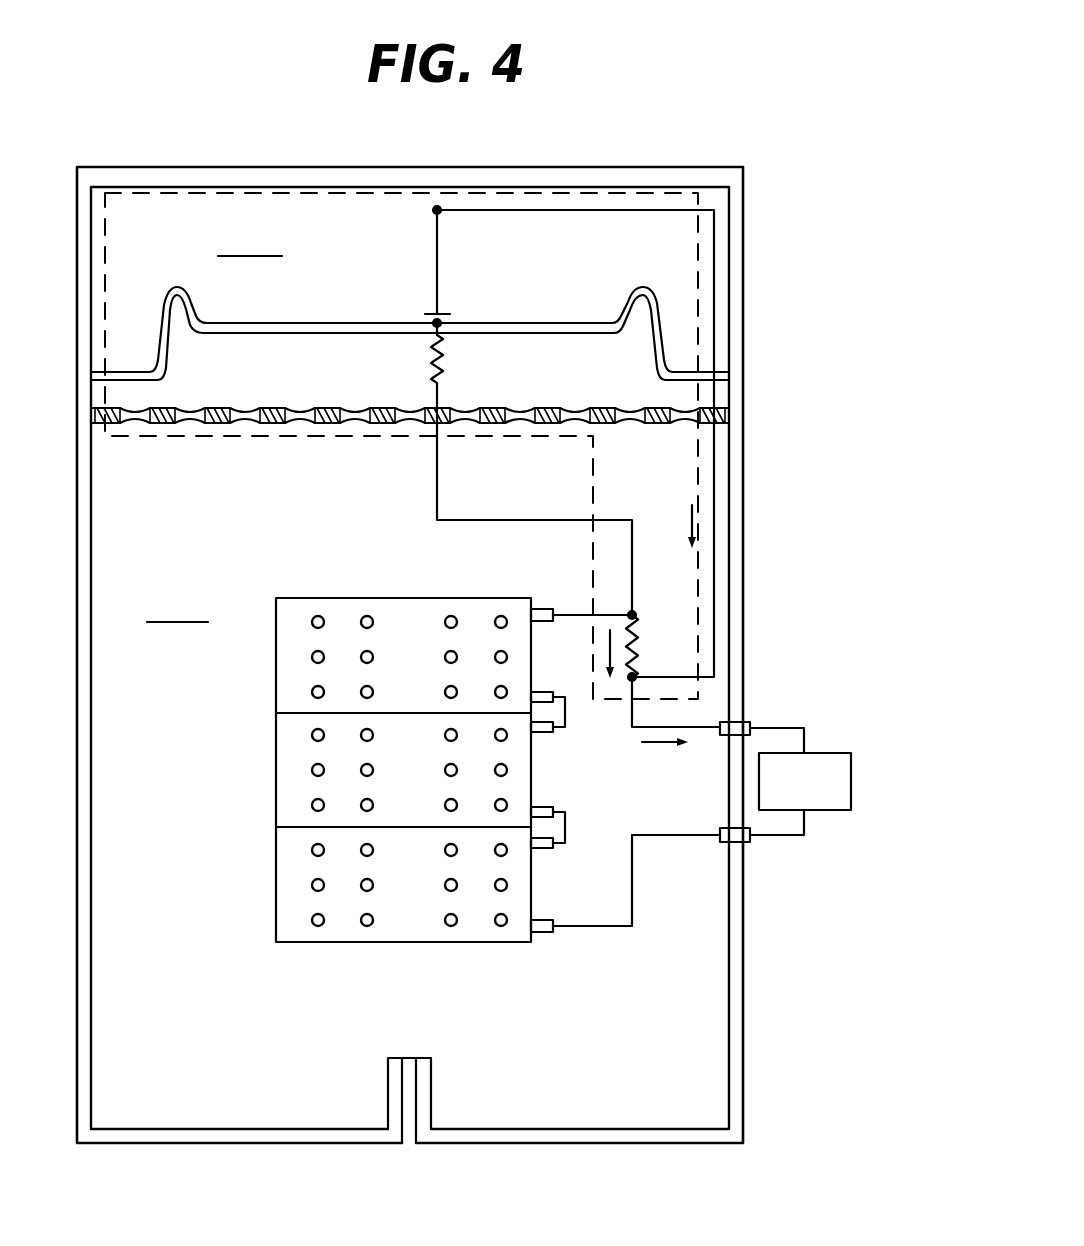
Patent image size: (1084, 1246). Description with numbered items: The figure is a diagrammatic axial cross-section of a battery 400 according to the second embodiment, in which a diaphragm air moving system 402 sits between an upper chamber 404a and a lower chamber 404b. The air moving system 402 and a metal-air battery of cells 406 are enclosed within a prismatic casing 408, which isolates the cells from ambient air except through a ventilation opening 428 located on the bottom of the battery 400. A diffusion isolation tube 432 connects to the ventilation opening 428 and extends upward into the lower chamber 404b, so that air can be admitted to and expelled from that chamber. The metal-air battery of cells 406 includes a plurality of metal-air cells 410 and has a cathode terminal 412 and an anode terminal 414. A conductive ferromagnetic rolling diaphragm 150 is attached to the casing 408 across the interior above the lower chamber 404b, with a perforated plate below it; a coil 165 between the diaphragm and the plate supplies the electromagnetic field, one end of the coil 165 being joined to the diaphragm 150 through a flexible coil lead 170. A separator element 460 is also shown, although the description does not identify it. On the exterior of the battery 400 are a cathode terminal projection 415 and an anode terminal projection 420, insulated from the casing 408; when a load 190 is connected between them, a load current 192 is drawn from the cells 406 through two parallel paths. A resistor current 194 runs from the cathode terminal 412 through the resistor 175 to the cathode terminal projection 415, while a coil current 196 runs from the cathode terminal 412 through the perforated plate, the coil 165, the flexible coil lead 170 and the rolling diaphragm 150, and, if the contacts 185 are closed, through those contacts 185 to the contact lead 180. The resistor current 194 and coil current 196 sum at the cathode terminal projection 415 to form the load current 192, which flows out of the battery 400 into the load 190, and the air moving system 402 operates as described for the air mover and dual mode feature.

The battery 400 is at (667, 114).
The prismatic casing 408 is at (745, 210).
The diffusion isolation tube 432 is at (432, 1083).
The ventilation opening 428 is at (408, 1146).
The diaphragm air moving system 402 is at (340, 437).
The upper chamber 404a is at (249, 242).
The lower chamber 404b is at (178, 608).
The ferromagnetic rolling diaphragm 150 is at (492, 323).
The separator 460 is at (160, 436).
The contacts 185 is at (434, 305).
The flexible coil lead 170 is at (433, 335).
The coil 165 is at (445, 372).
The contact lead 180 is at (568, 212).
The resistor 175 is at (636, 658).
The coil current 196 is at (692, 518).
The resistor current 194 is at (605, 652).
The load current 192 is at (660, 748).
The metal-air battery of cells 406 is at (345, 598).
The metal-air cells 410 is at (275, 667).
The cathode terminal 412 is at (536, 588).
The anode terminal 414 is at (550, 950).
The cathode terminal projection 415 is at (747, 722).
The anode terminal projection 420 is at (747, 842).
The load 190 is at (851, 776).